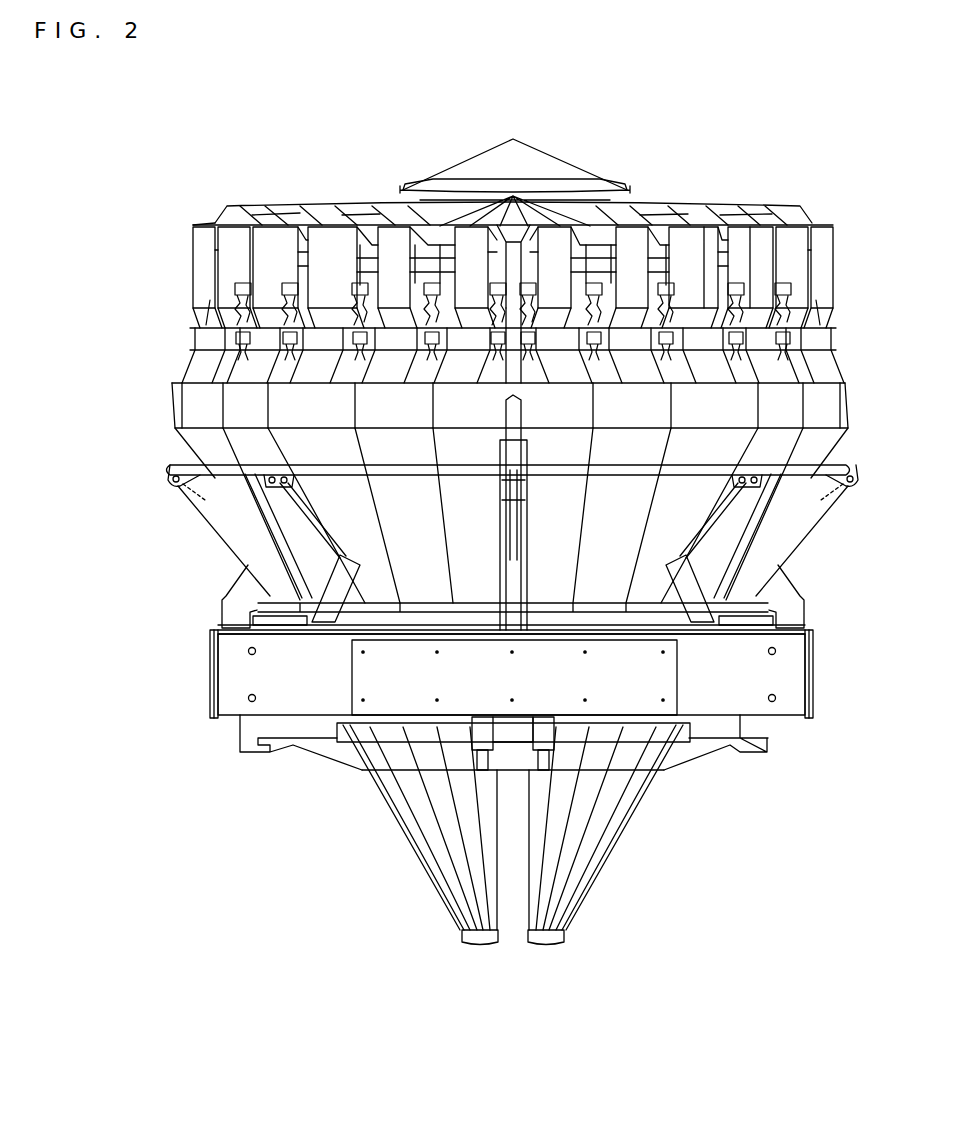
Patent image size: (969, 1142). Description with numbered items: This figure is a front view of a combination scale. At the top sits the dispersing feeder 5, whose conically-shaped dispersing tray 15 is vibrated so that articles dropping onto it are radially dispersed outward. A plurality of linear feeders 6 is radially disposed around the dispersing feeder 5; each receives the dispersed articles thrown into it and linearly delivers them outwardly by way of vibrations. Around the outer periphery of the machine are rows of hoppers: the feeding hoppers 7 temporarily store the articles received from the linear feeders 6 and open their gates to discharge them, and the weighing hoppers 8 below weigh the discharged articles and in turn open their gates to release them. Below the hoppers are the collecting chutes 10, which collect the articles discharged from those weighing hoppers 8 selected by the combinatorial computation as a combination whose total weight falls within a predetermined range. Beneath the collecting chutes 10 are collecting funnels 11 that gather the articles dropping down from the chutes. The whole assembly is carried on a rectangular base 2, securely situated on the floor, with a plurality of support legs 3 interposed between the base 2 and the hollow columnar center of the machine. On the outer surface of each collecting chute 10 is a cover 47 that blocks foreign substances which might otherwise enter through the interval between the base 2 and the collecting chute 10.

The base 2 is at (232, 670).
The support legs 3 is at (222, 603).
The dispersing feeder 5 is at (547, 149).
The linear feeders 6 is at (308, 202).
The feeding hoppers 7 is at (210, 265).
The weighing hoppers 8 is at (205, 362).
The collecting chutes 10 is at (243, 505).
The collecting funnels 11 is at (423, 862).
The dispersing tray 15 is at (468, 167).
The cover 47 is at (436, 626).